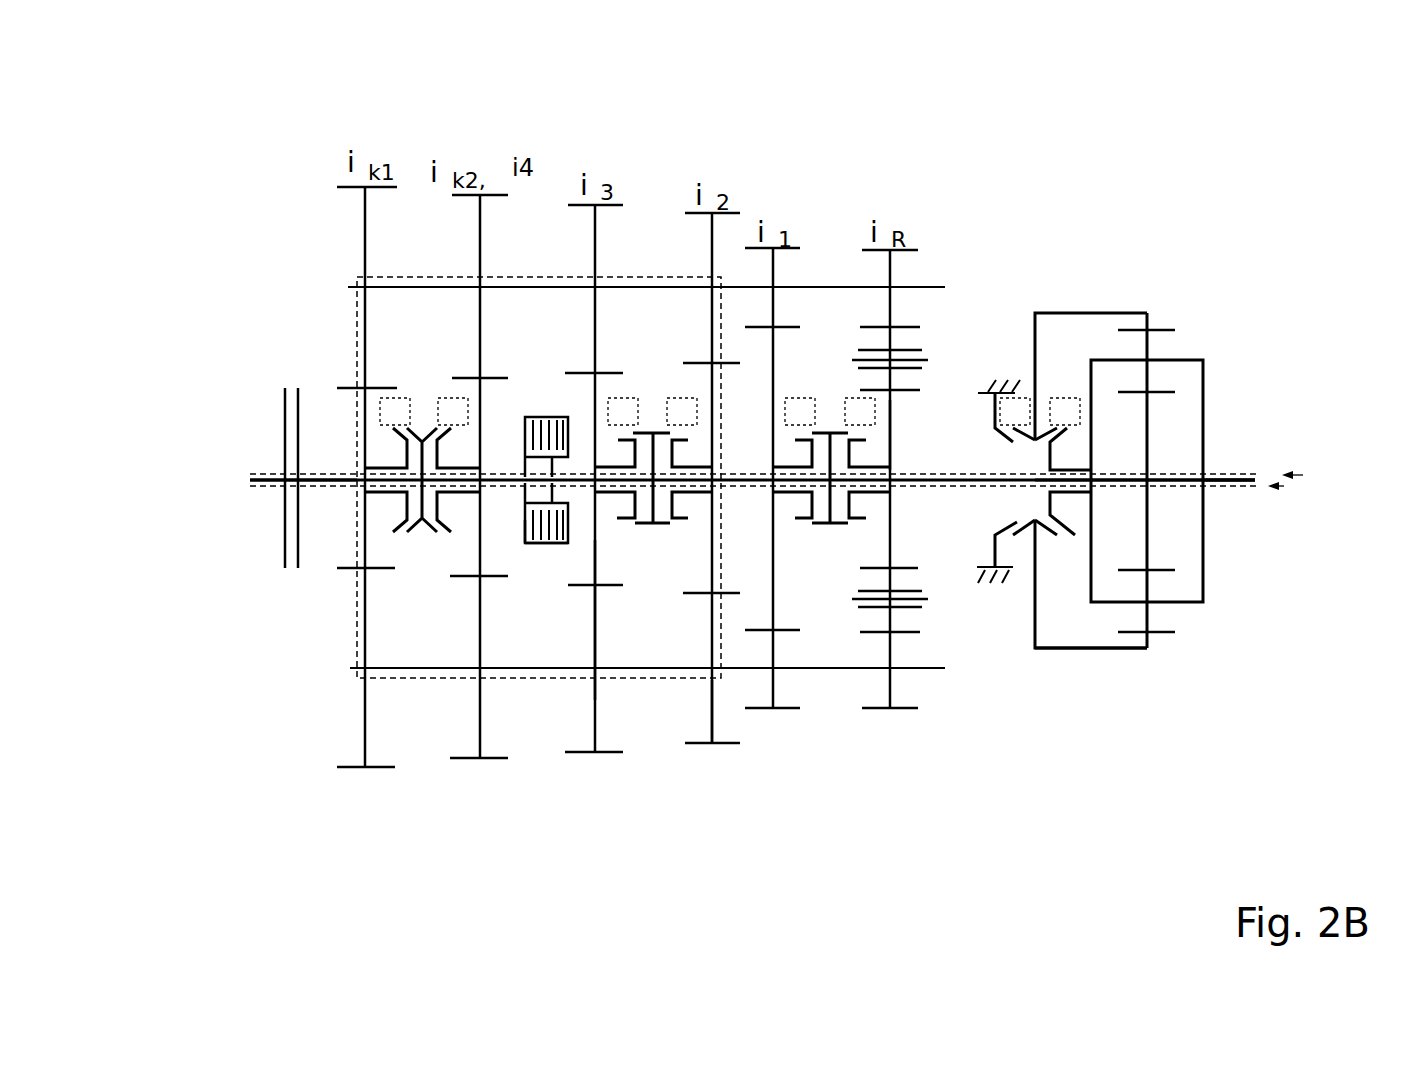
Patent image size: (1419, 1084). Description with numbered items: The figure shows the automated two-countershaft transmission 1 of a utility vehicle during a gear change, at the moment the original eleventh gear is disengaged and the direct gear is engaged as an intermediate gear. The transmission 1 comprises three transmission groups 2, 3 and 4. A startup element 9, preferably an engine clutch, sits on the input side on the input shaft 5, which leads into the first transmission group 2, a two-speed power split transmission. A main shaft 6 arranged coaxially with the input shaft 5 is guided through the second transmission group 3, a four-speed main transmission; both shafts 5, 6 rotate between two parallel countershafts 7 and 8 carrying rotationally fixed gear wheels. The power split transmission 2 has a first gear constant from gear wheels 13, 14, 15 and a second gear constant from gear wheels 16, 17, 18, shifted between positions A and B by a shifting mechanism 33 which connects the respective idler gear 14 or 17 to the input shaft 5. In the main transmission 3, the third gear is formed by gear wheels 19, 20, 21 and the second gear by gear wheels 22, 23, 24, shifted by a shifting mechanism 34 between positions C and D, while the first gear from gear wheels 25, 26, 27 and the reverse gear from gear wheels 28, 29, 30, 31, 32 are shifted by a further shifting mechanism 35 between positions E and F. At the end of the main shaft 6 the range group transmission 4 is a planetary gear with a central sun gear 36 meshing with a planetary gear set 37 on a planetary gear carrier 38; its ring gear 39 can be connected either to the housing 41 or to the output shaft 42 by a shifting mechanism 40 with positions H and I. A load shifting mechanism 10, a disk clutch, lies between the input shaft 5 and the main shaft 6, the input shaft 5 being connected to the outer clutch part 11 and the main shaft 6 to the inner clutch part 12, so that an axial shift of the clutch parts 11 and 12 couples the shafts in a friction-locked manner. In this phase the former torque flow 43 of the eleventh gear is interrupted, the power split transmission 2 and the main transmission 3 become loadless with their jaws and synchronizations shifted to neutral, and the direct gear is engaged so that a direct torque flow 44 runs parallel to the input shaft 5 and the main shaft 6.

The two-countershaft transmission 1 is at (272, 190).
The first transmission group 2 is at (415, 738).
The second transmission group 3 is at (694, 758).
The range group transmission 4 is at (1114, 694).
The input shaft 5 is at (335, 478).
The main shaft 6 is at (1120, 480).
The first countershaft 7 is at (357, 287).
The second countershaft 8 is at (527, 600).
The startup element 9 is at (285, 522).
The load shifting mechanism 10 is at (538, 590).
The outer clutch part 11 is at (595, 550).
The inner clutch part 12 is at (523, 417).
The gear wheel 13 is at (365, 385).
The idler gear 14 is at (365, 428).
The gear wheel 15 is at (365, 593).
The gear wheel 16 is at (478, 257).
The idler gear 17 is at (480, 537).
The gear wheel 18 is at (533, 545).
The gear wheel 19 is at (595, 258).
The gear wheel 20 is at (480, 670).
The gear wheel 21 is at (595, 700).
The gear wheel 22 is at (712, 262).
The gear wheel 23 is at (712, 548).
The gear wheel 24 is at (712, 710).
The gear wheel 25 is at (775, 278).
The gear wheel 26 is at (773, 560).
The gear wheel 27 is at (773, 687).
The gear wheel 28 is at (893, 278).
The gear wheel 29 is at (893, 428).
The gear wheel 30 is at (1000, 393).
The gear wheel 31 is at (890, 683).
The gear wheel 32 is at (890, 620).
The shifting mechanism 33 is at (418, 386).
The shifting mechanism 34 is at (651, 382).
The shifting mechanism 35 is at (829, 387).
The sun gear 36 is at (1147, 527).
The planetary gear set 37 is at (1147, 608).
The planetary gear carrier 38 is at (1203, 540).
The ring gear 39 is at (1093, 650).
The shifting mechanism 40 is at (1049, 383).
The housing 41 is at (1020, 313).
The output shaft 42 is at (1250, 476).
The torque flow 43 is at (1273, 480).
The direct torque flow 44 is at (1230, 487).